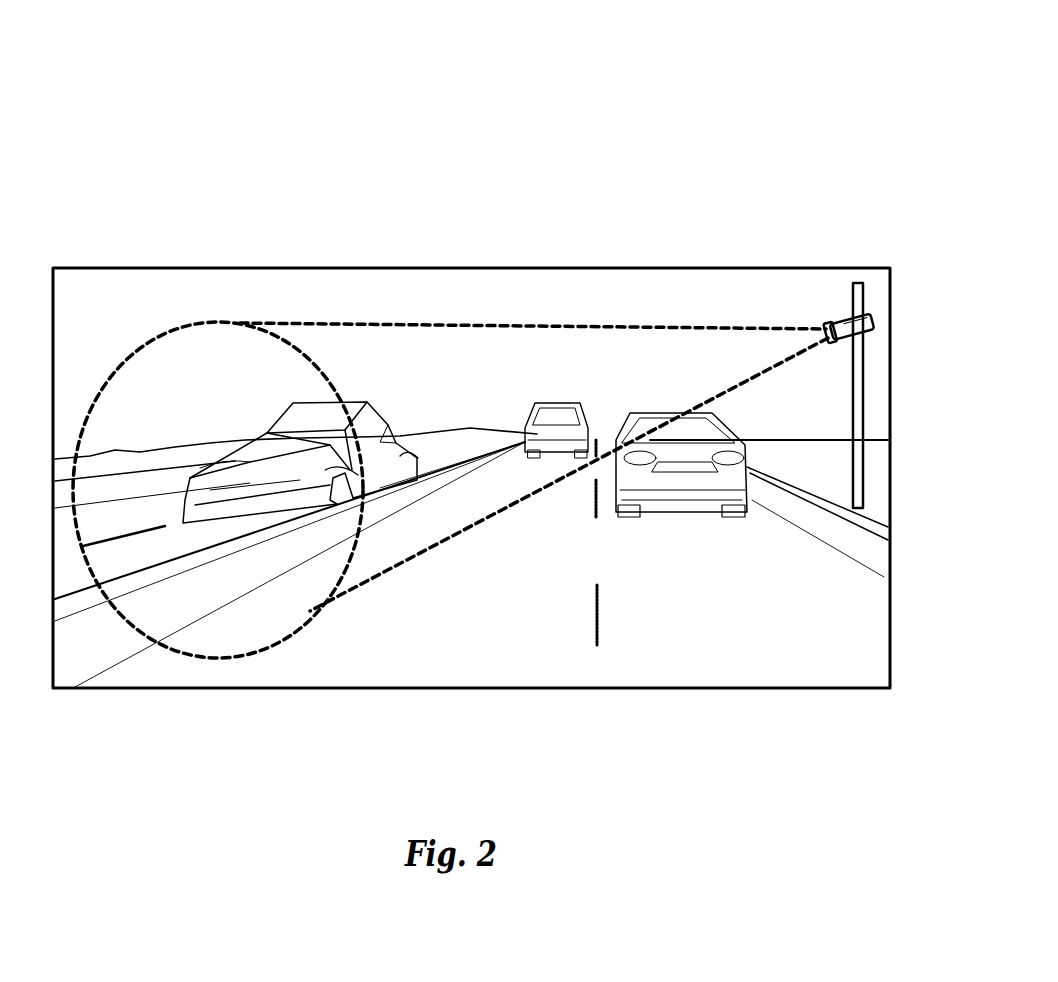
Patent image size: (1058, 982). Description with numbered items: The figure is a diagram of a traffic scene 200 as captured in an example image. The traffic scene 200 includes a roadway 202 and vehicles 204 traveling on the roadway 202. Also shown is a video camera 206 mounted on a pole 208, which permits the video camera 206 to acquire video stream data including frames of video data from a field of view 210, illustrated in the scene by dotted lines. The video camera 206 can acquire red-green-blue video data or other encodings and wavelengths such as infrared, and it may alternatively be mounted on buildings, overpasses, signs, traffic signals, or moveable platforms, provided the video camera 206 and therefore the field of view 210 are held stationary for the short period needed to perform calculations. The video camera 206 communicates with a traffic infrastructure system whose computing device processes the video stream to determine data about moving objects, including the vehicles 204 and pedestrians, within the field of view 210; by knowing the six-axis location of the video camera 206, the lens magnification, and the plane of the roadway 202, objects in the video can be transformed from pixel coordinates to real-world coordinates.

The traffic scene 200 is at (482, 59).
The roadway 202 is at (450, 645).
The vehicles 204 is at (542, 303).
The video camera 206 is at (877, 322).
The pole 208 is at (864, 388).
The field of view 210 is at (108, 650).